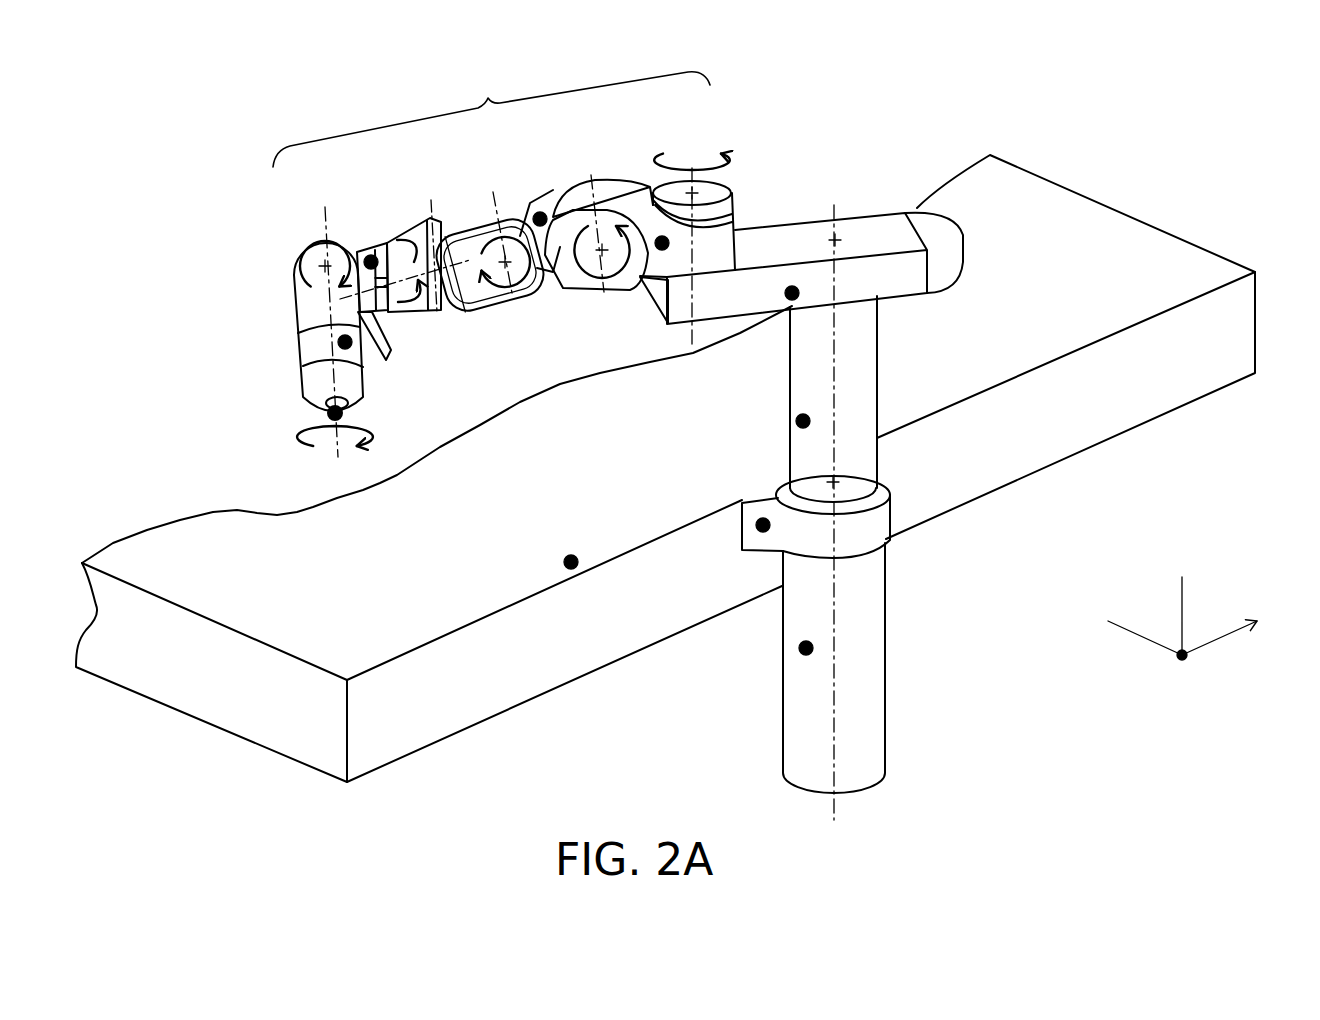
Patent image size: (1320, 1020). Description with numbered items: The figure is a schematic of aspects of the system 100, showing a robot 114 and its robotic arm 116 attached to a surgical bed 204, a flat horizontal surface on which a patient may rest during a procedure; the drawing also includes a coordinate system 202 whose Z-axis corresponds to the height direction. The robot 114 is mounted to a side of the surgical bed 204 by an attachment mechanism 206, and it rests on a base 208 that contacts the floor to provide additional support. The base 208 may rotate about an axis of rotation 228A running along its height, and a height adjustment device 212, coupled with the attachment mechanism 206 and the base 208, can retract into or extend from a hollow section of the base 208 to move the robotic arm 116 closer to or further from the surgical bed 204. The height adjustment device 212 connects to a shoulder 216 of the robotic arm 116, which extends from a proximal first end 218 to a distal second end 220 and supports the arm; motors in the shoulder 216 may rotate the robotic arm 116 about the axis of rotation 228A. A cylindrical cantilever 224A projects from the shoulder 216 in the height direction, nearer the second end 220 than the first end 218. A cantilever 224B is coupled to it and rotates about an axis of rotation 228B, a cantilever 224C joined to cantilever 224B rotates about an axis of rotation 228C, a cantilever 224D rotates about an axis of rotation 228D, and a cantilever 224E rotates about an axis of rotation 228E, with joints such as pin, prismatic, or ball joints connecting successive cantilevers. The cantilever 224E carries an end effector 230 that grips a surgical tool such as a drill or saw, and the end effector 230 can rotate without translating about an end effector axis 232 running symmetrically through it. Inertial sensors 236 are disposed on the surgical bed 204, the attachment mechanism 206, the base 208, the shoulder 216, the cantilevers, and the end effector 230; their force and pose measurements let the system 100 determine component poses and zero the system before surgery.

The system 100 is at (128, 114).
The robot 114 is at (716, 702).
The robotic arm 116 is at (488, 98).
The coordinate system 202 is at (1192, 664).
The surgical bed 204 is at (1090, 195).
The attachment mechanism 206 is at (890, 487).
The base 208 is at (867, 690).
The height adjustment device 212 is at (853, 377).
The shoulder 216 is at (873, 235).
The first end 218 is at (965, 270).
The second end 220 is at (657, 286).
The cantilever 224A is at (718, 214).
The cantilever 224B is at (600, 197).
The cantilever 224C is at (552, 270).
The cantilever 224D is at (430, 240).
The cantilever 224E is at (295, 282).
The axis of rotation 228A is at (834, 726).
The axis of rotation 228B is at (693, 340).
The axis of rotation 228C is at (580, 172).
The axis of rotation 228D is at (493, 192).
The axis of rotation 228E is at (347, 297).
The end effector 230 is at (320, 382).
The end effector axis 232 is at (325, 215).
The inertial sensors 236 is at (340, 344).